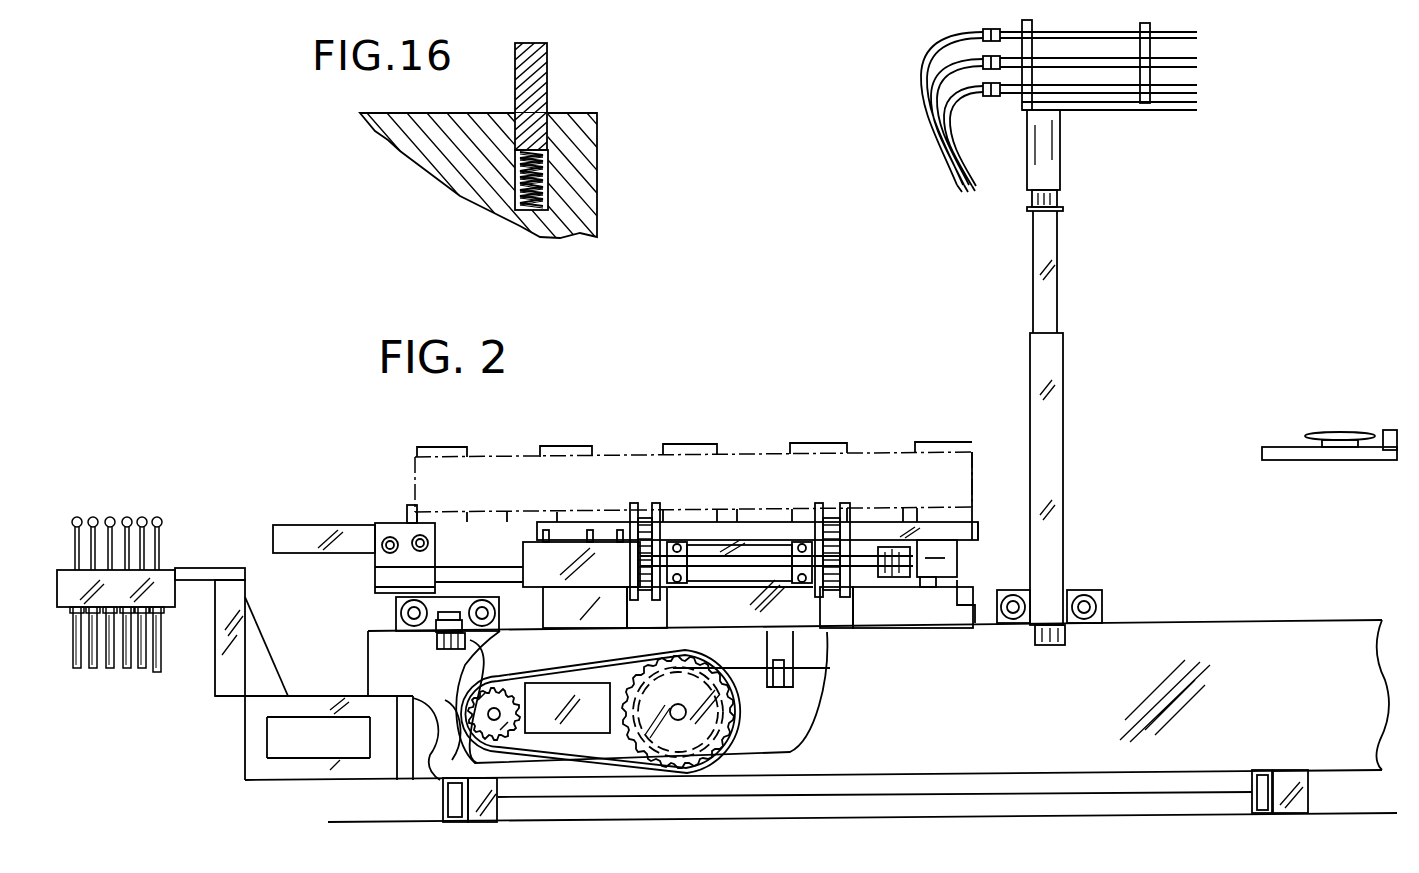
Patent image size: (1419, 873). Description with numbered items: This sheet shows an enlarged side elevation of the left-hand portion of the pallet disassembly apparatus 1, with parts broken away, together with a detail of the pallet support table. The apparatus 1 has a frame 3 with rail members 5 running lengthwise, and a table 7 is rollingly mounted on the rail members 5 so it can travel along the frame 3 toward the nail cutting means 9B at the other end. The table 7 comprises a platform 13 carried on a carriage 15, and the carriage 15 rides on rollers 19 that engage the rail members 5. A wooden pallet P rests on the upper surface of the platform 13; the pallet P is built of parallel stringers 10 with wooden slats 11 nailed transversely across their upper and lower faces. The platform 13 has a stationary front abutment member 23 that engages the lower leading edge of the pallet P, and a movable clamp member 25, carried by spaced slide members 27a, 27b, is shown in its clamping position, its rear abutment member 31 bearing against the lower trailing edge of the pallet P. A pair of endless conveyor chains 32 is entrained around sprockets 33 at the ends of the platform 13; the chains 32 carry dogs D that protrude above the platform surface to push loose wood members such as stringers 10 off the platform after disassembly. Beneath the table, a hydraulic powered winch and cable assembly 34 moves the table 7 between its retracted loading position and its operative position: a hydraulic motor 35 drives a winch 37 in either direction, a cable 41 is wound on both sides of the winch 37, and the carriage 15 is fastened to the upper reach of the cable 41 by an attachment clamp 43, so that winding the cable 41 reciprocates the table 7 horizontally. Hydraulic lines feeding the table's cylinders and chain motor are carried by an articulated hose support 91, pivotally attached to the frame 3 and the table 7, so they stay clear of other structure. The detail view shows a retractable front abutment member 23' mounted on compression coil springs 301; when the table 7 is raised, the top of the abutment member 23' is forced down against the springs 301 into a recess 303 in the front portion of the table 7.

In FIG. 2, the apparatus 1 is at (1230, 273).
In FIG. 2, the frame 3 is at (1252, 592).
In FIG. 2, the rail members 5 is at (1295, 670).
In FIG. 16, the table 7 is at (597, 143).
In FIG. 2, the table 7 is at (343, 613).
In FIG. 2, the nail cutting means 9B is at (1335, 412).
In FIG. 2, the stringers 10 is at (748, 483).
In FIG. 2, the slats 11 is at (843, 437).
In FIG. 2, the platform 13 is at (950, 530).
In FIG. 2, the carriage 15 is at (970, 573).
In FIG. 2, the rollers 19 is at (405, 640).
In FIG. 2, the front abutment member 23 is at (998, 496).
In FIG. 16, the retractable front abutment member 23' is at (569, 86).
In FIG. 2, the clamp member 25 is at (295, 523).
In FIG. 2, the slide member 27a is at (493, 532).
In FIG. 2, the slide member 27b is at (477, 585).
In FIG. 2, the rear abutment member 31 is at (405, 512).
In FIG. 2, the endless conveyor chains 32 is at (622, 507).
In FIG. 2, the sprockets 33 is at (650, 600).
In FIG. 2, the hydraulic powered winch and cable assembly 34 is at (587, 783).
In FIG. 2, the hydraulic motor 35 is at (492, 720).
In FIG. 2, the winch 37 is at (680, 722).
In FIG. 2, the cable 41 is at (800, 687).
In FIG. 2, the attachment clamp 43 is at (621, 705).
In FIG. 2, the articulated hose support 91 is at (1103, 175).
In FIG. 16, the compression coil springs 301 is at (540, 183).
In FIG. 16, the recess 303 is at (543, 200).
In FIG. 2, the pallet P is at (627, 447).
In FIG. 2, the dogs D is at (670, 507).